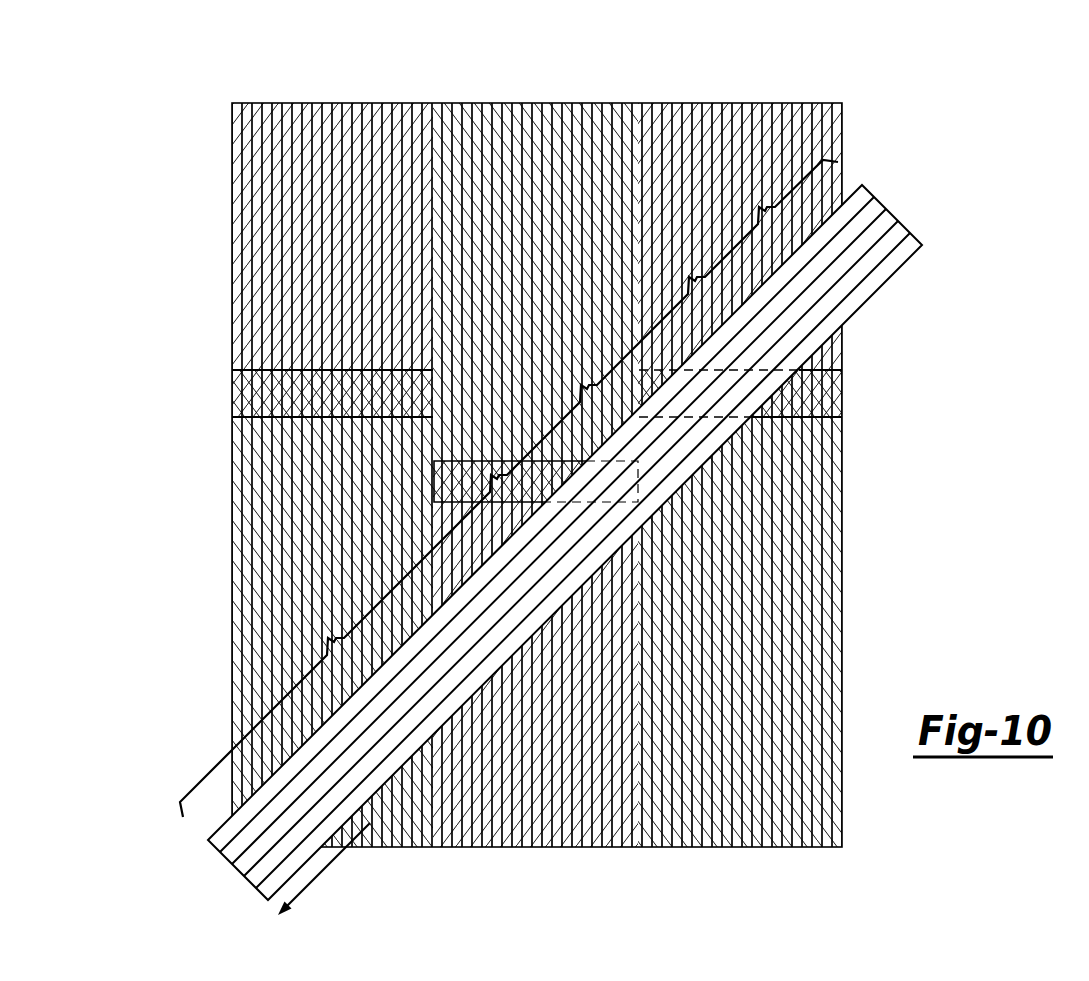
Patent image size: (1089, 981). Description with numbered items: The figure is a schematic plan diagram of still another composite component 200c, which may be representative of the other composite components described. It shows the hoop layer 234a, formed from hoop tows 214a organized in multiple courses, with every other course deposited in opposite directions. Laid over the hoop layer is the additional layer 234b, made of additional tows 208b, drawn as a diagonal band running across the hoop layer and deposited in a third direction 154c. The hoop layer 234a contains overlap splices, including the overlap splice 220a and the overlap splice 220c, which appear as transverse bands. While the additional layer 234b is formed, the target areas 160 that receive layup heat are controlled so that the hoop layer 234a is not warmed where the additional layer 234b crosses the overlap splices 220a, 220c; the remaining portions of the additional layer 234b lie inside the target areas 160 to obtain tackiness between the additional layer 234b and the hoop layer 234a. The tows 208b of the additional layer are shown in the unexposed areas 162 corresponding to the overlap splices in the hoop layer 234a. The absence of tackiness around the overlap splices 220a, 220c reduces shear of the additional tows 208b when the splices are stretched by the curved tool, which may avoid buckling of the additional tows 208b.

The composite component 200c is at (562, 478).
The hoop layer 234a is at (463, 475).
The hoop tows 214a is at (232, 180).
The additional layer 234b is at (623, 542).
The tows of the additional layer 208b is at (898, 272).
The target areas 160 is at (757, 222).
The unexposed areas 162 is at (580, 388).
The overlap splice 220a is at (232, 393).
The overlap splice 220c is at (842, 394).
The third direction 154c is at (330, 863).